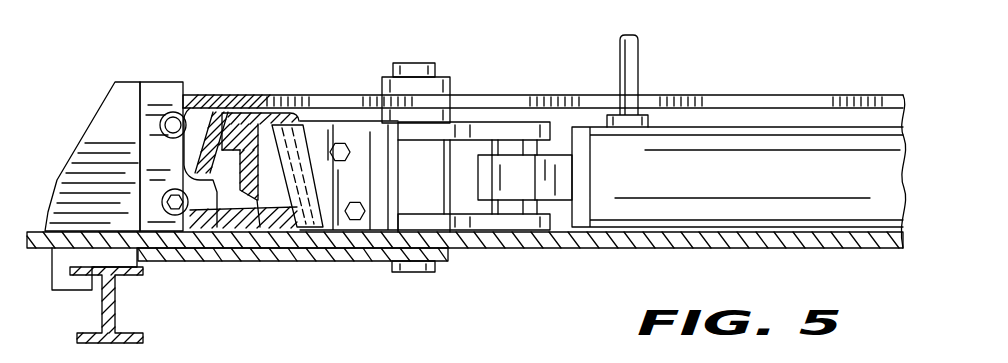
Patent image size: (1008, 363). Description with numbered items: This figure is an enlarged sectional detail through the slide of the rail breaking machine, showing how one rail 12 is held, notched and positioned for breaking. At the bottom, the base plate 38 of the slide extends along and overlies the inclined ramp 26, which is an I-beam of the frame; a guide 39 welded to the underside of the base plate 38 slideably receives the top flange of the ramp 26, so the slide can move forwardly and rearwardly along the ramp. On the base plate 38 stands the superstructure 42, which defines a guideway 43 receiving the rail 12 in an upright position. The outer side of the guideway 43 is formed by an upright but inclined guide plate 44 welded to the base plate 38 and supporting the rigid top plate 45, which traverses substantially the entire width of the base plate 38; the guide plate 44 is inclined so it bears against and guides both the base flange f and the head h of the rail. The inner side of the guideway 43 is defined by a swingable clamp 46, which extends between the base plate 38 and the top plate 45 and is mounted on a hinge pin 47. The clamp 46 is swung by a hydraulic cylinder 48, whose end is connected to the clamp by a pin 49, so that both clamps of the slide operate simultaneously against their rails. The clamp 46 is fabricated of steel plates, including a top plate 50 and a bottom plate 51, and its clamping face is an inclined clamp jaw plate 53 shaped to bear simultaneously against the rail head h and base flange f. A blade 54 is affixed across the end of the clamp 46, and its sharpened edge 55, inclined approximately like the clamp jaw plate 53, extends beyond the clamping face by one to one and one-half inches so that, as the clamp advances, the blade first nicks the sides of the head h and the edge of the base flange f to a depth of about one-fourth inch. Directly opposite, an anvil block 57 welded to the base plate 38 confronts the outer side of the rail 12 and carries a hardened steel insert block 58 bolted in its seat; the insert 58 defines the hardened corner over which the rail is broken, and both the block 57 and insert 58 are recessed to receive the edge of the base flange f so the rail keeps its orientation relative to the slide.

The rail 12 is at (248, 228).
The inclined ramp 26 is at (115, 300).
The base plate 38 is at (688, 248).
The guide 39 is at (52, 275).
The superstructure 42 is at (507, 97).
The guideway 43 is at (232, 157).
The guide plate 44 is at (203, 108).
The top plate 45 is at (345, 100).
The clamp 46 is at (467, 132).
The hinge pin 47 is at (418, 70).
The hydraulic cylinder 48 is at (790, 163).
The pin 49 is at (525, 147).
The top plate of clamp 50 is at (510, 128).
The bottom plate of clamp 51 is at (525, 222).
The clamp jaw plate 53 is at (310, 137).
The blade 54 is at (375, 203).
The sharpened edge 55 is at (272, 215).
The anvil block 57 is at (113, 130).
The hardened steel insert block 58 is at (162, 97).
The head of rail h is at (238, 128).
The base flange of rail f is at (267, 225).